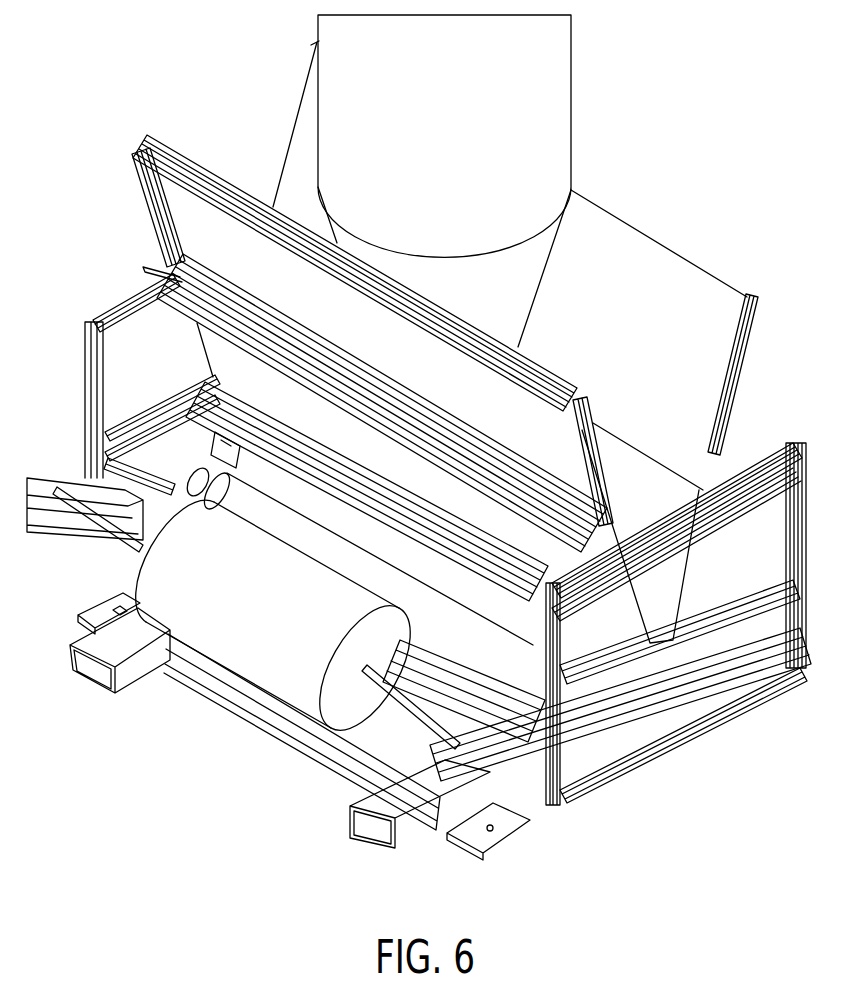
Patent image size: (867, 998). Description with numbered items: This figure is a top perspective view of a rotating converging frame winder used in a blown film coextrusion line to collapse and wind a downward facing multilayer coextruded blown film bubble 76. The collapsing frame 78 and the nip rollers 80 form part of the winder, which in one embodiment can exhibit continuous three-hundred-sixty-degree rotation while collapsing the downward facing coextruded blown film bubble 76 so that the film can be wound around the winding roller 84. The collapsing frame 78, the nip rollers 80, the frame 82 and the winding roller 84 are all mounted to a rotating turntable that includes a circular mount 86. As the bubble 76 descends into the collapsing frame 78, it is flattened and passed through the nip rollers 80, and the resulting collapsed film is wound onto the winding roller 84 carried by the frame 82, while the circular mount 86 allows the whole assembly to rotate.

The downward facing coextruded blown film bubble 76 is at (571, 96).
The collapsing frame 78 is at (667, 293).
The nip rollers 80 is at (580, 650).
The frame 82 is at (773, 607).
The winding roller 84 is at (240, 628).
The circular mount 86 is at (387, 733).